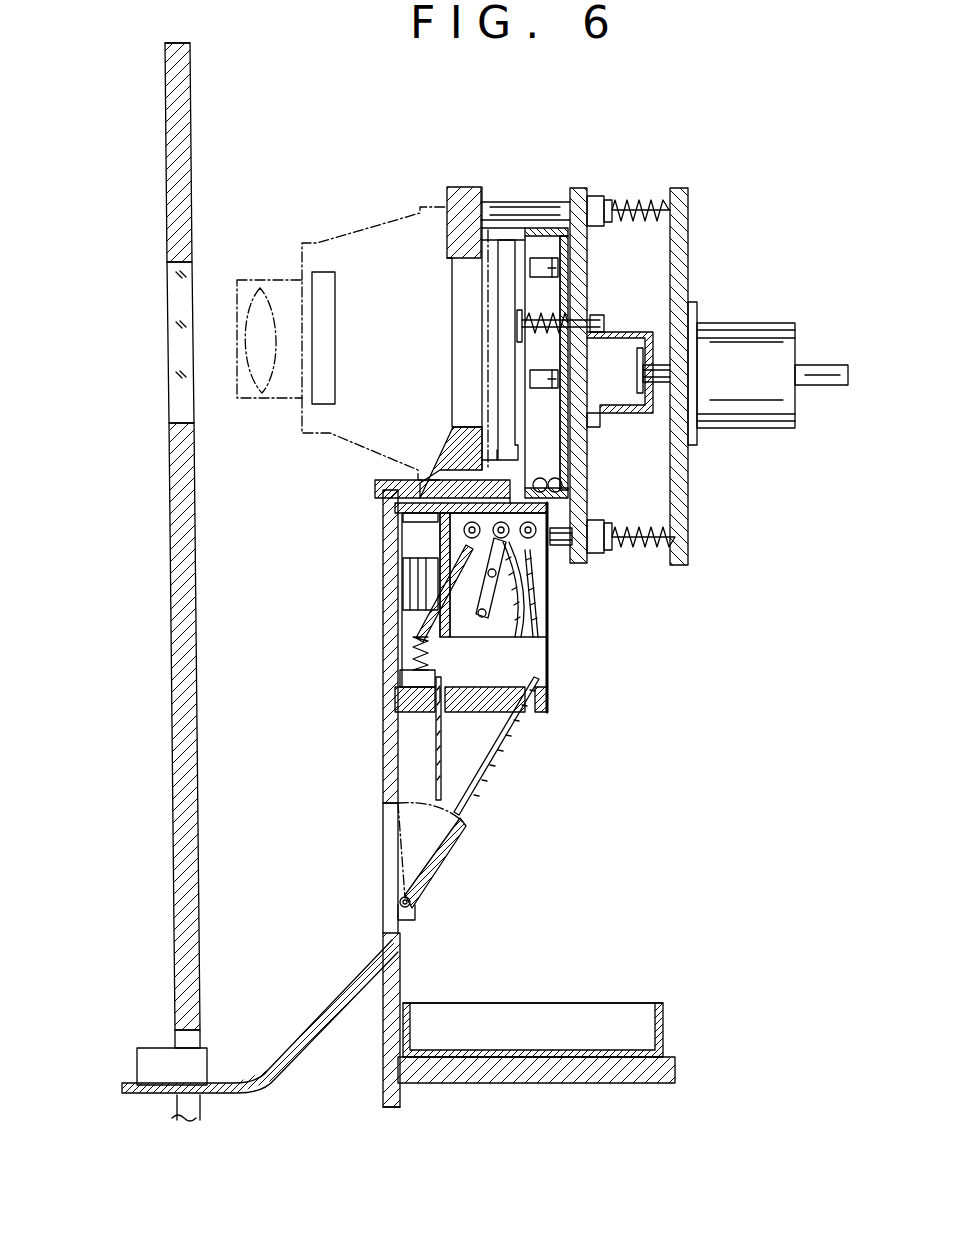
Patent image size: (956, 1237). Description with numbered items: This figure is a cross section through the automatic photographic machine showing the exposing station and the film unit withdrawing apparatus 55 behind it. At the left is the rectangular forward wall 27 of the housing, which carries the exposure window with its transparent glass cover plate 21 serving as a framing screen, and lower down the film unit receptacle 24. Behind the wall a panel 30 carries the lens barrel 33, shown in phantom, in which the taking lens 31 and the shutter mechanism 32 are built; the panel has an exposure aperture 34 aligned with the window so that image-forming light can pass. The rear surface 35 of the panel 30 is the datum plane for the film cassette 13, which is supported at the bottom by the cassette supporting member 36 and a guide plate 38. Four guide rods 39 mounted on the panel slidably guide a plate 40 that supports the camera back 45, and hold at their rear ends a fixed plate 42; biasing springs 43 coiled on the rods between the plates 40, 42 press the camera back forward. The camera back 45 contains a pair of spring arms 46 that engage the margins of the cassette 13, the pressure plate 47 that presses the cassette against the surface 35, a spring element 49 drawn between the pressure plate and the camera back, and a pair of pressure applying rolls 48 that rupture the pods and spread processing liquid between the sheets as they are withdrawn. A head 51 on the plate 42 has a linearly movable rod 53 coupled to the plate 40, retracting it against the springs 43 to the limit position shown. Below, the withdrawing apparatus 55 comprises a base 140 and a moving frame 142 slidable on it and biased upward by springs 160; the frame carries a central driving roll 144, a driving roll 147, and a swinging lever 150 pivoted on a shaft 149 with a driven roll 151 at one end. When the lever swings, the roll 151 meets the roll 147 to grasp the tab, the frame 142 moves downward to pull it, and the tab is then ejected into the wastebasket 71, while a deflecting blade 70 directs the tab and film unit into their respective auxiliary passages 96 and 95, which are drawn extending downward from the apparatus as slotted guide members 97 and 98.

The film cassette 13 is at (488, 325).
The transparent glass cover plate 21 is at (175, 398).
The film unit receptacle 24 is at (150, 1060).
The forward wall 27 is at (183, 143).
The panel 30 is at (460, 190).
The taking lens 31 is at (262, 290).
The shutter mechanism 32 is at (322, 272).
The lens barrel 33 is at (365, 240).
The exposure aperture 34 is at (455, 270).
The rear surface 35 is at (482, 228).
The cassette supporting member 36 is at (467, 462).
The guide plate 38 is at (497, 450).
The guide rods 39 is at (510, 203).
The plate 40 is at (580, 195).
The plate 42 is at (680, 210).
The biasing springs 43 is at (640, 205).
The camera back 45 is at (540, 242).
The spring arms 46 is at (547, 270).
The pressure plate 47 is at (505, 340).
The pressure applying rolls 48 is at (555, 485).
The spring assembly 49 is at (548, 330).
The head 51 is at (740, 335).
The linearly movable rod 53 is at (822, 375).
The withdrawing apparatus 55 is at (592, 680).
The deflecting blade 70 is at (440, 855).
The wastebasket 71 is at (658, 1020).
The auxiliary passage 95 is at (530, 640).
The auxiliary passage 96 is at (445, 615).
The guide slot 97 is at (438, 773).
The guide slot 98 is at (500, 745).
The base 140 is at (398, 600).
The moving frame 142 is at (540, 625).
The central driving roll 144 is at (530, 545).
The driving roll 147 is at (445, 530).
The shaft 149 is at (520, 600).
The swinging lever 150 is at (430, 660).
The driven roll 151 is at (505, 575).
The springs 160 is at (440, 695).